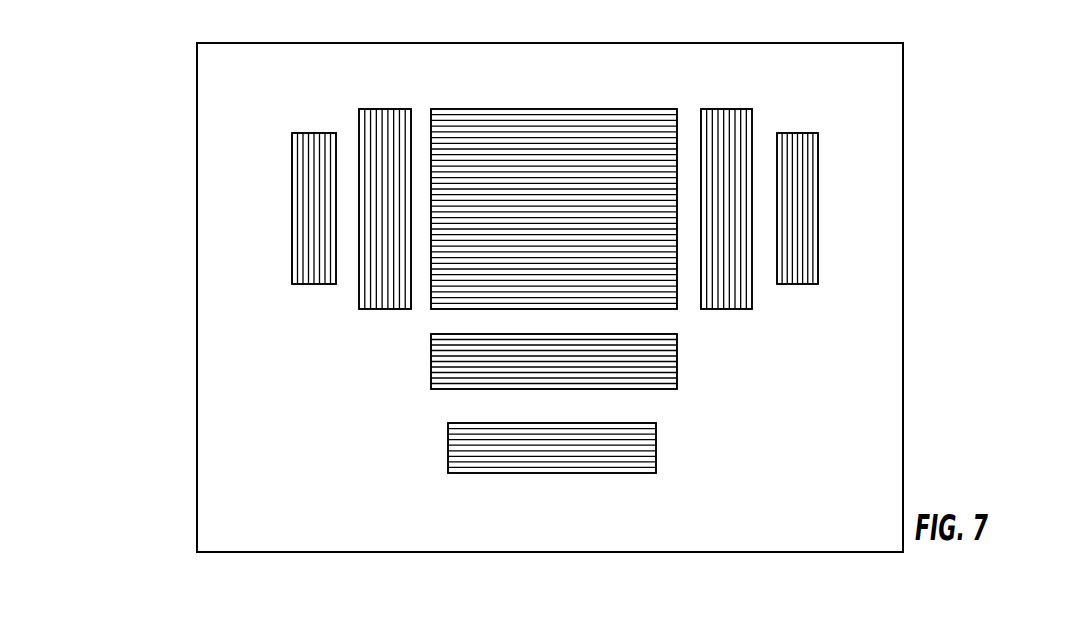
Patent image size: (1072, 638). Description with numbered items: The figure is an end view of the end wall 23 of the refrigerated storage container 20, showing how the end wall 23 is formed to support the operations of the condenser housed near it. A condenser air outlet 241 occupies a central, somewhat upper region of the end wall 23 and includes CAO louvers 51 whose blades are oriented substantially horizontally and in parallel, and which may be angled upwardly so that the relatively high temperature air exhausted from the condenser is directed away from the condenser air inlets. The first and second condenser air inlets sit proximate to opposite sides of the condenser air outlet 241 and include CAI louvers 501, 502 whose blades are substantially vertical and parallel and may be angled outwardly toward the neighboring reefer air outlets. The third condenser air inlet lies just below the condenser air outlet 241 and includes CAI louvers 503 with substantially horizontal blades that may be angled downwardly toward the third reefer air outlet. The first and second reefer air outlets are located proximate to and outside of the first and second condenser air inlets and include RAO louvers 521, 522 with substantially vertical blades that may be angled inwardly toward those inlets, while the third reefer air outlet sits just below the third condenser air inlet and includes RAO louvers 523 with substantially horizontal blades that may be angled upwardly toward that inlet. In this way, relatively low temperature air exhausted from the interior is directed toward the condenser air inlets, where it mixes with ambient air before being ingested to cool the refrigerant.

The refrigerated storage container 20 is at (197, 93).
The end wall 23 is at (237, 86).
The CAO louvers 51 is at (532, 157).
The condenser air outlet 241 is at (653, 109).
The CAI louvers 501 is at (739, 278).
The CAI louvers 502 is at (370, 277).
The CAI louvers 503 is at (665, 362).
The RAO louvers 521 is at (795, 248).
The RAO louvers 522 is at (310, 262).
The RAO louvers 523 is at (647, 453).